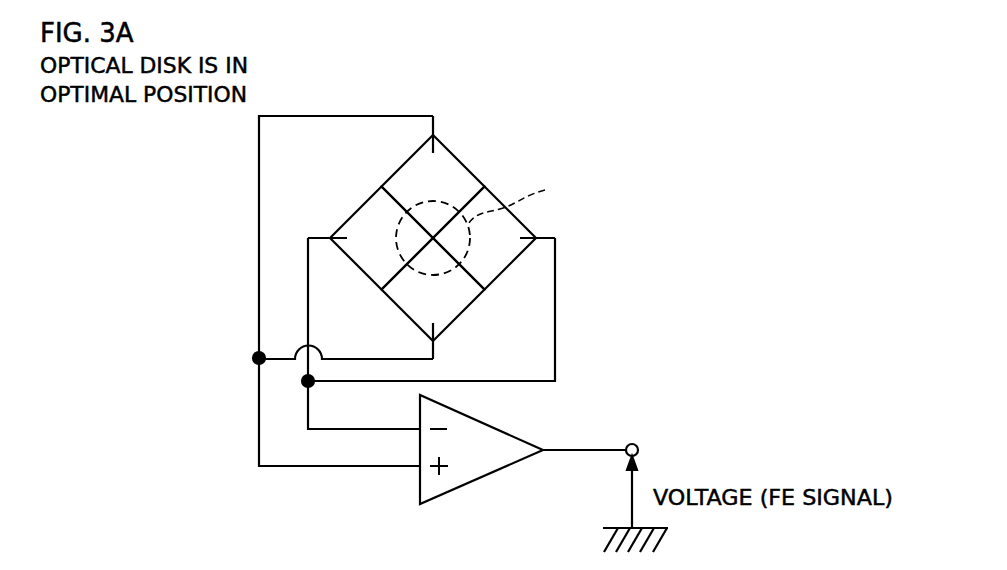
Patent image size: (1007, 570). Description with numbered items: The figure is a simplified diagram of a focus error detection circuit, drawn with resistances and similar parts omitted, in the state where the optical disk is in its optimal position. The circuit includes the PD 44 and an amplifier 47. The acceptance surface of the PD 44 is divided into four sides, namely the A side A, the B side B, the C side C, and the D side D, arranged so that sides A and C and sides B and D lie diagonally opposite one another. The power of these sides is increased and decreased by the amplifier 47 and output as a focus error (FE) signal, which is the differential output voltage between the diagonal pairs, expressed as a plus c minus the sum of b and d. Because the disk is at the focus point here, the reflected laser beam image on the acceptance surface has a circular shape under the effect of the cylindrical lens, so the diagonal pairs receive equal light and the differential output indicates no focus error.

The PD 44 is at (610, 222).
The amplifier 47 is at (488, 457).
The A side A is at (433, 186).
The B side B is at (381, 238).
The C side C is at (433, 289).
The D side D is at (484, 238).